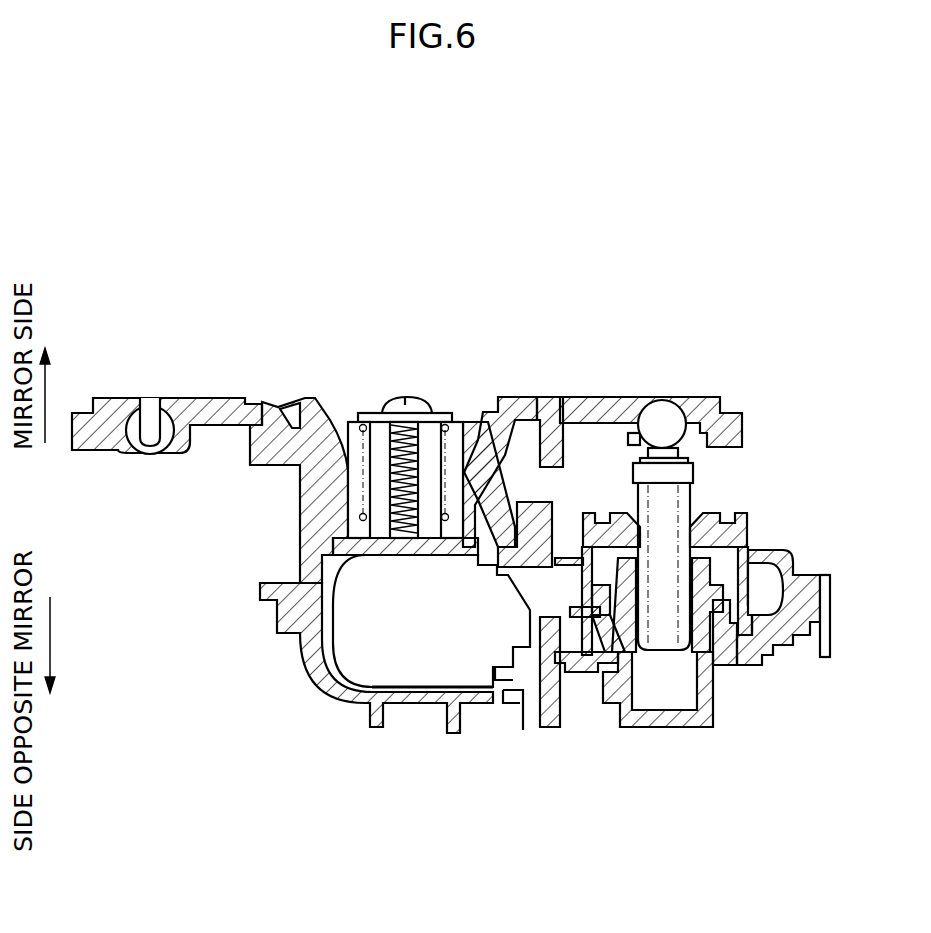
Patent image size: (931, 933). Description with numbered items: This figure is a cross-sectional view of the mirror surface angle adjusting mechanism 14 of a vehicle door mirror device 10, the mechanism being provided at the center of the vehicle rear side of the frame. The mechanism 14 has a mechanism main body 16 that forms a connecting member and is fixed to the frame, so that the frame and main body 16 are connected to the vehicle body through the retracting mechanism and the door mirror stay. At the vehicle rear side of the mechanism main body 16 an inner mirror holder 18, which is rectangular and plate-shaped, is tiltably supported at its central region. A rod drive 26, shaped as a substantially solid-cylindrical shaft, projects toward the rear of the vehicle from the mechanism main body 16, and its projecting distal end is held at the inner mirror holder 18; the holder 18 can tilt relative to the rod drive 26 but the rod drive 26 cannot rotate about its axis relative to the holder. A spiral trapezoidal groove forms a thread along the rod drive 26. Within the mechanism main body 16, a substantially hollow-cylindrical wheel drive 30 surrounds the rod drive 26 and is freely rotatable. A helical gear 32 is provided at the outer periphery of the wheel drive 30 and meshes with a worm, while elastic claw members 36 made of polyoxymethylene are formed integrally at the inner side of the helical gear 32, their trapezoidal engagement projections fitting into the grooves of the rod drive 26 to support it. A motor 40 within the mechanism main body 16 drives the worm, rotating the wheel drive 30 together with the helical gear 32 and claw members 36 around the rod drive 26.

The mirror device 10 is at (465, 549).
The mirror surface angle adjusting mechanism 14 is at (465, 503).
The mechanism main body 16 is at (398, 581).
The inner mirror holder 18 is at (97, 396).
The rod drive 26 is at (704, 478).
The wheel drive 30 is at (733, 642).
The helical gear 32 is at (790, 563).
The claw member 36 is at (600, 562).
The motor 40 is at (417, 672).